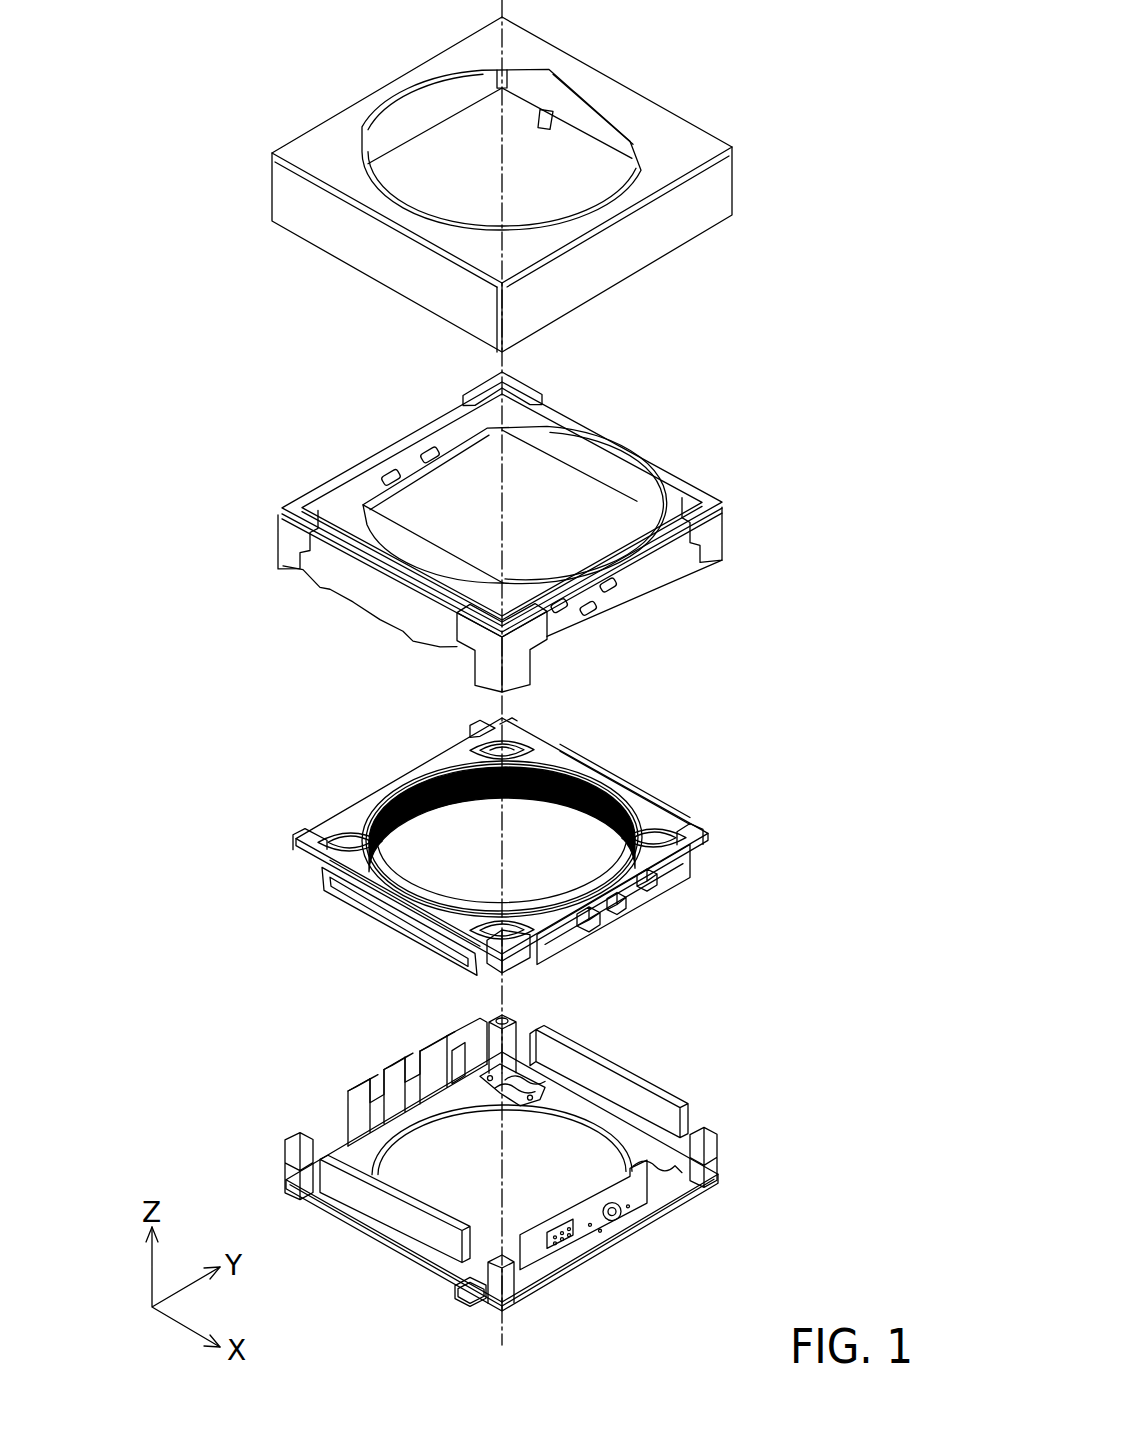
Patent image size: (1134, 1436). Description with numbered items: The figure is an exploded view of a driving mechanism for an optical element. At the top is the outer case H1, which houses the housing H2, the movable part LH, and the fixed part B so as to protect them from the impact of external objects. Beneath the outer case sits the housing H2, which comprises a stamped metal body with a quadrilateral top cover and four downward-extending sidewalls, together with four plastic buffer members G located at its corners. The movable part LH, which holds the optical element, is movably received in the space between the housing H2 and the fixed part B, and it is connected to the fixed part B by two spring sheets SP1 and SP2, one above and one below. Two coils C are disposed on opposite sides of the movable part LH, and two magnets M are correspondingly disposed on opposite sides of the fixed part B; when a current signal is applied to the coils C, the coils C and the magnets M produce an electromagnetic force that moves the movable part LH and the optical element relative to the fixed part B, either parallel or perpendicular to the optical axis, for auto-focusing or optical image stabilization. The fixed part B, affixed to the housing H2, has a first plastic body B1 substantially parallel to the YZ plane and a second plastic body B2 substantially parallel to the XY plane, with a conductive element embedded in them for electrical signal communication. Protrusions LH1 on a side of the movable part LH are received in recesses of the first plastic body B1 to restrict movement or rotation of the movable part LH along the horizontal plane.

The outer case H1 is at (677, 113).
The housing H2 is at (595, 435).
The plastic buffer member G is at (510, 382).
The movable part LH is at (410, 787).
The protrusion LH1 is at (612, 900).
The spring sheet SP1 is at (533, 757).
The spring sheet SP2 is at (537, 1070).
The coil C is at (340, 897).
The magnet M is at (620, 1093).
The fixed part B is at (345, 1117).
The first plastic body B1 is at (637, 1210).
The second plastic body B2 is at (463, 1293).